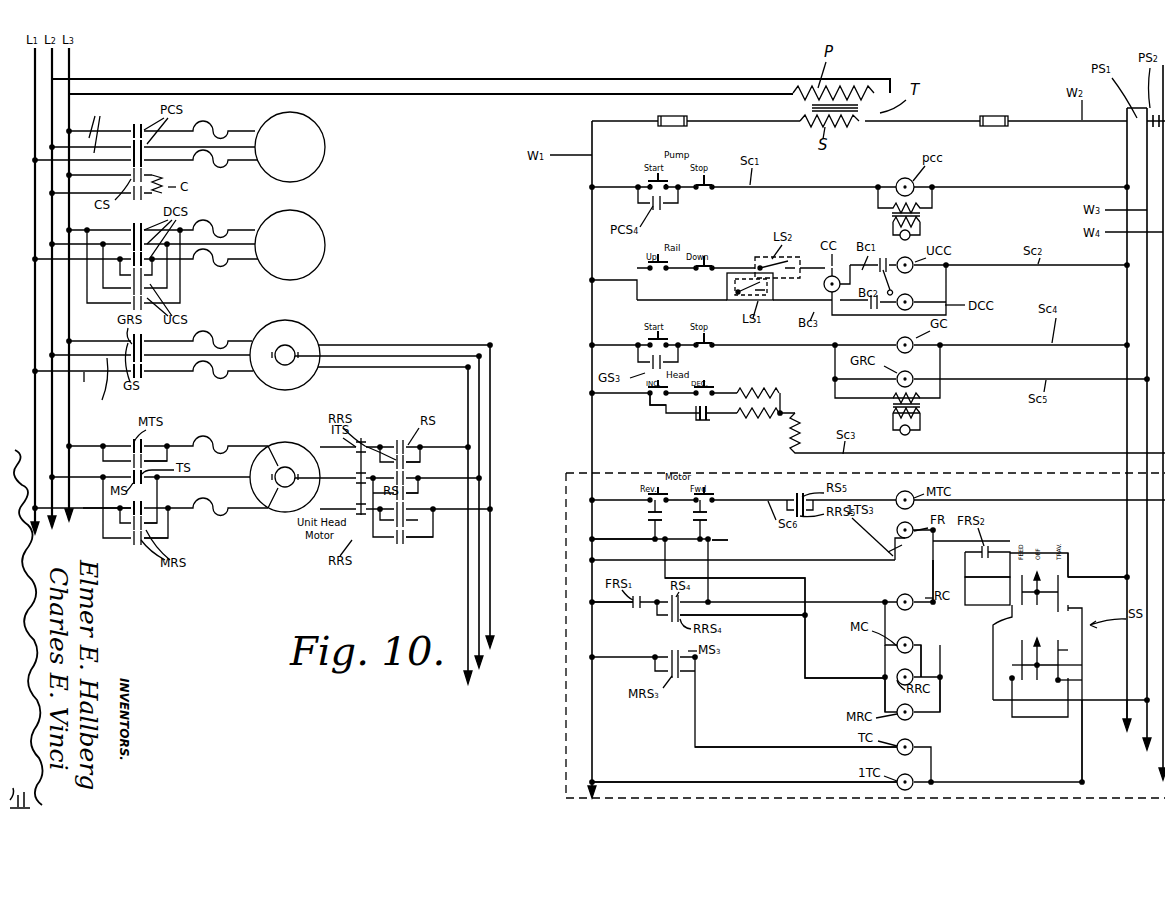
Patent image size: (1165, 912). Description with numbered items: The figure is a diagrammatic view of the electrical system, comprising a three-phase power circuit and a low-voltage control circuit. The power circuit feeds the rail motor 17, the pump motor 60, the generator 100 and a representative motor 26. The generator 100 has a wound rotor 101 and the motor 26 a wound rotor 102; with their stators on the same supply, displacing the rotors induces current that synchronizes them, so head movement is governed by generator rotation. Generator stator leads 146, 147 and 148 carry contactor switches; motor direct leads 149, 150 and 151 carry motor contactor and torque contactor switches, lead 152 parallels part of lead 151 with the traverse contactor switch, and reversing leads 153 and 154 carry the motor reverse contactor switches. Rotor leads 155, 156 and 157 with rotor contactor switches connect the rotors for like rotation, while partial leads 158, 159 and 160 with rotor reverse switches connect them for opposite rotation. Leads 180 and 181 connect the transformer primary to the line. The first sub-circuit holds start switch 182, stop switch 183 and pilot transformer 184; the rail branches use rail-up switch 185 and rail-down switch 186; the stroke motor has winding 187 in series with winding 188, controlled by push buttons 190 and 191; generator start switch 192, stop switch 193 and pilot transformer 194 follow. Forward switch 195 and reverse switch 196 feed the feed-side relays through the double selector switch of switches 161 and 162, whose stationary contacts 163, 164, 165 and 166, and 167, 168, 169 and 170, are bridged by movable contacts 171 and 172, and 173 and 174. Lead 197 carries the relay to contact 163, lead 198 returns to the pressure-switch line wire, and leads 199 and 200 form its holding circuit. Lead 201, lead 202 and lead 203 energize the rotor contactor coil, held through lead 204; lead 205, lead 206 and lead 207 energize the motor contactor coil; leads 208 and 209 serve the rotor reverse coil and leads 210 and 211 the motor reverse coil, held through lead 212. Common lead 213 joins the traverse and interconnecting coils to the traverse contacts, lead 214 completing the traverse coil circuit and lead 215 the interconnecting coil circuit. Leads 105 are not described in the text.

The rail motor 17 is at (318, 233).
The motor 26 is at (284, 442).
The pump motor 60 is at (322, 136).
The generator 100 is at (283, 321).
The wound rotor of generator 101 is at (281, 367).
The wound rotor of motor 102 is at (280, 497).
The pump motor supply conductors 105 is at (92, 126).
The lead 146 is at (88, 385).
The lead 147 is at (91, 386).
The lead 148 is at (90, 341).
The direct lead 149 is at (83, 512).
The direct lead 150 is at (80, 476).
The direct lead 151 is at (90, 445).
The parallel lead 152 is at (150, 458).
The reversing lead 153 is at (171, 522).
The reversing lead 154 is at (158, 494).
The rotor lead 155 is at (396, 344).
The rotor lead 156 is at (440, 355).
The rotor lead 157 is at (403, 368).
The partial lead 158 is at (423, 455).
The partial lead 159 is at (421, 489).
The partial lead 160 is at (433, 523).
The manually adjustable switch 161 is at (1040, 576).
The manually adjustable switch 162 is at (1062, 680).
The stationary contact 163 is at (1012, 578).
The stationary contact 164 is at (1040, 655).
The stationary contact 165 is at (1068, 558).
The stationary contact 166 is at (1070, 621).
The stationary contact 167 is at (1014, 642).
The stationary contact 168 is at (1012, 684).
The stationary contact 169 is at (1070, 652).
The stationary contact 170 is at (1068, 680).
The movable contact 171 is at (1022, 562).
The movable contact 172 is at (1064, 603).
The movable contact 173 is at (1020, 666).
The movable contact 174 is at (1062, 668).
The lead 180 is at (436, 78).
The lead 181 is at (481, 93).
The pump motor start switch 182 is at (648, 180).
The pump motor stop switch 183 is at (700, 195).
The pilot light transformer 184 is at (925, 215).
The rail-up push button switch 185 is at (650, 266).
The rail-down push button switch 186 is at (714, 262).
The motor winding 187 is at (790, 442).
The motor winding 188 is at (740, 392).
The push button switch 190 is at (700, 418).
The push button switch 191 is at (652, 406).
The generator start push button switch 192 is at (650, 340).
The generator stop push button switch 193 is at (708, 352).
The pilot light transformer 194 is at (925, 398).
The motor forward switch 195 is at (709, 518).
The motor reverse switch 196 is at (646, 518).
The lead 197 is at (804, 560).
The lead 198 is at (1106, 722).
The lead 199 is at (752, 421).
The lead 200 is at (1098, 575).
The lead 201 is at (648, 540).
The lead 202 is at (737, 546).
The lead 203 is at (932, 577).
The lead 204 is at (650, 606).
The lead 205 is at (884, 607).
The lead 206 is at (922, 652).
The lead 207 is at (987, 591).
The lead 208 is at (763, 578).
The lead 209 is at (895, 657).
The lead 210 is at (884, 690).
The lead 211 is at (940, 700).
The lead 212 is at (762, 611).
The common lead 213 is at (1082, 753).
The lead 214 is at (720, 746).
The lead 215 is at (642, 781).